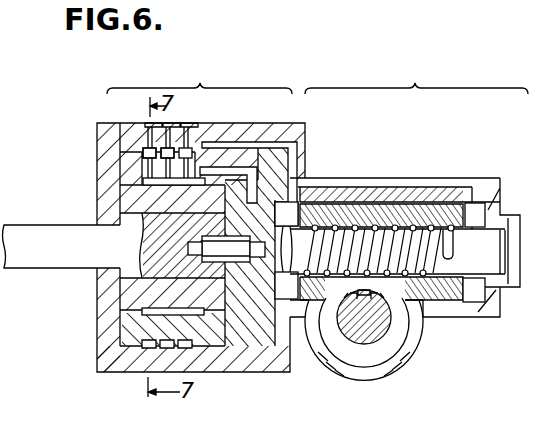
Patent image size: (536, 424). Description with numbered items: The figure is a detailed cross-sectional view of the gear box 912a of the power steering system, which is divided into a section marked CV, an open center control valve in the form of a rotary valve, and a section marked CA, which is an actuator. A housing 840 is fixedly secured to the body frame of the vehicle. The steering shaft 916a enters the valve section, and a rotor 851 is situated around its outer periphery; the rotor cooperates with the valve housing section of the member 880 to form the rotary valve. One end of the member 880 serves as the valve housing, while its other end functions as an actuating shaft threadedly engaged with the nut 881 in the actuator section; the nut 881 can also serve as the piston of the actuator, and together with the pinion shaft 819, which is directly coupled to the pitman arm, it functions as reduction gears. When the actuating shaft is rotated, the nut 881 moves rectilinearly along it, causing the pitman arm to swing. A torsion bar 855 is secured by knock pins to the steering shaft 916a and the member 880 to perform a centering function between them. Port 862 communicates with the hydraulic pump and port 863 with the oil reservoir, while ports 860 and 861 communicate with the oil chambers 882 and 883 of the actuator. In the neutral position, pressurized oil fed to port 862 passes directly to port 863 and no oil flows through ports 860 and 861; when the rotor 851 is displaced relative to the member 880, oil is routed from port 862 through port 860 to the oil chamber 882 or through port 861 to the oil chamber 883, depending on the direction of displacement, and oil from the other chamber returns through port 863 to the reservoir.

The gear box 912a is at (528, 68).
The steering shaft 916a is at (37, 235).
The housing 840 is at (215, 359).
The rotor 851 is at (122, 307).
The torsion bar 855 is at (292, 338).
The port 860 is at (206, 130).
The port 861 is at (244, 132).
The port 862 is at (142, 128).
The port 863 is at (164, 124).
The member 880 is at (263, 351).
The nut 881 is at (454, 317).
The oil chamber 882 is at (475, 204).
The oil chamber 883 is at (290, 204).
The pinion shaft 819 is at (375, 334).